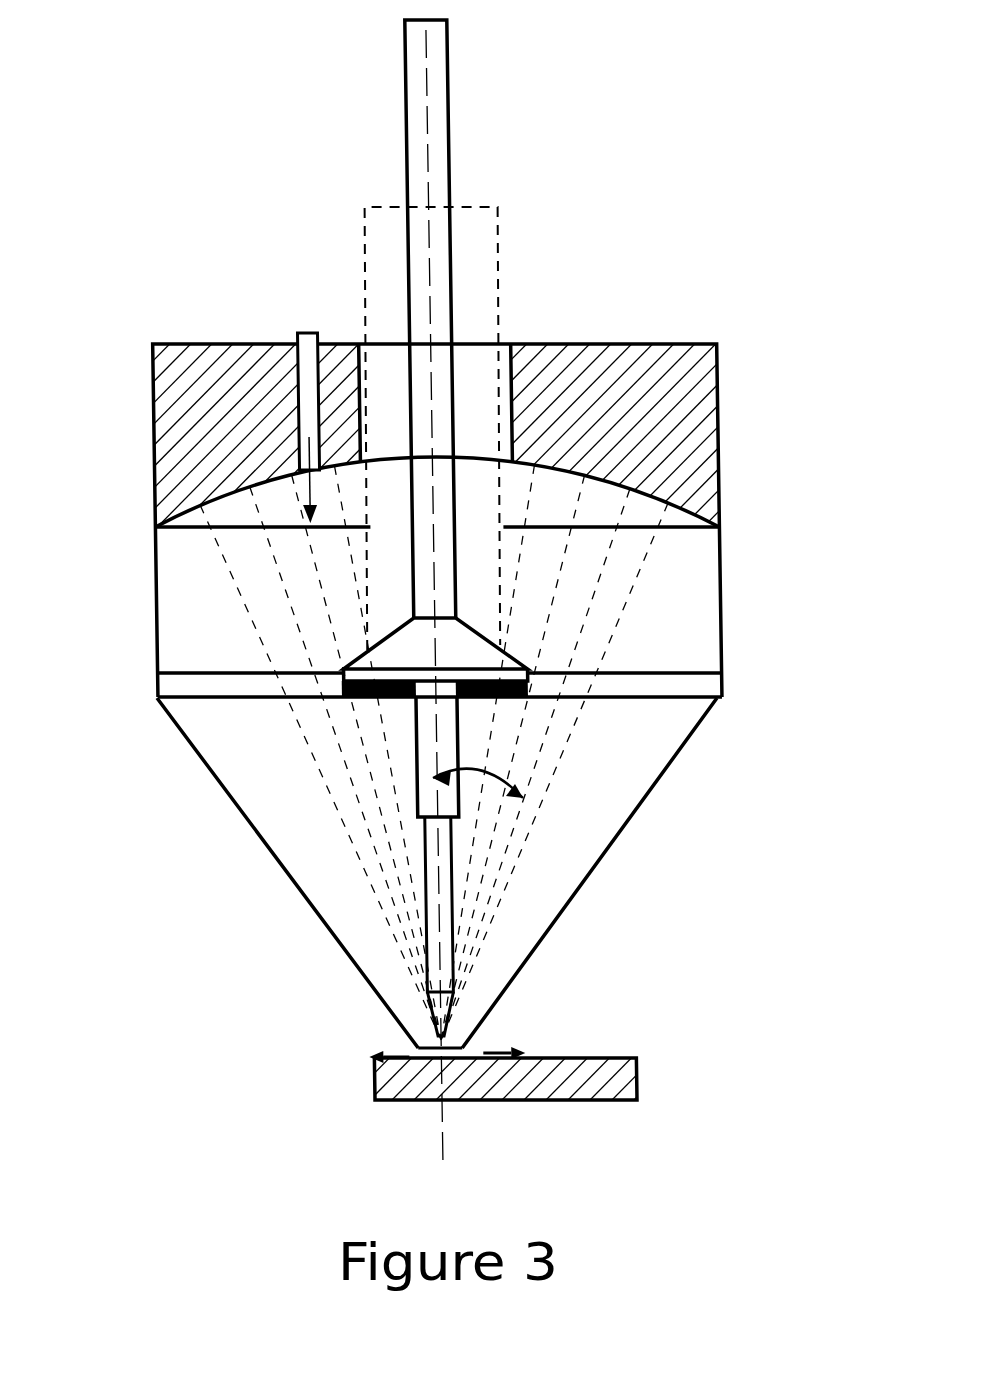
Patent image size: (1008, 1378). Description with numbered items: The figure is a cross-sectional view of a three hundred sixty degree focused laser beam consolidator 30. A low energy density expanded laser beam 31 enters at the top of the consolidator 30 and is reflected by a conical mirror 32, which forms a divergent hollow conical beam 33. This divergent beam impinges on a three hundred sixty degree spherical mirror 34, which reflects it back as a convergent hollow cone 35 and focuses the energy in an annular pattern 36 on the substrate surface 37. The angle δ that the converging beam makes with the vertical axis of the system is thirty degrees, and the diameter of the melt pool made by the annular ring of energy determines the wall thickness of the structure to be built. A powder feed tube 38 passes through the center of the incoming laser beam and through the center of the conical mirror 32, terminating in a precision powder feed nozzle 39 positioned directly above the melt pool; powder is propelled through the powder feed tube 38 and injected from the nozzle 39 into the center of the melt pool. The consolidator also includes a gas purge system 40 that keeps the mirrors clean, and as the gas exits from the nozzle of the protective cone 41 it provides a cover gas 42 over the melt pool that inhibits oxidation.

The 360 degree focused laser beam consolidator 30 is at (848, 412).
The low energy density expanded laser beam 31 is at (483, 280).
The conical mirror 32 is at (363, 650).
The divergent hollow conical beam 33 is at (530, 572).
The 360 degree spherical mirror 34 is at (580, 467).
The convergent hollow cone 35 is at (537, 737).
The annular pattern 36 is at (457, 1040).
The substrate surface 37 is at (600, 1058).
The powder feed tube 38 is at (422, 100).
The precision powder feed nozzle 39 is at (400, 1010).
The gas purge system 40 is at (308, 332).
The protective cone 41 is at (253, 843).
The cover gas 42 is at (397, 1048).